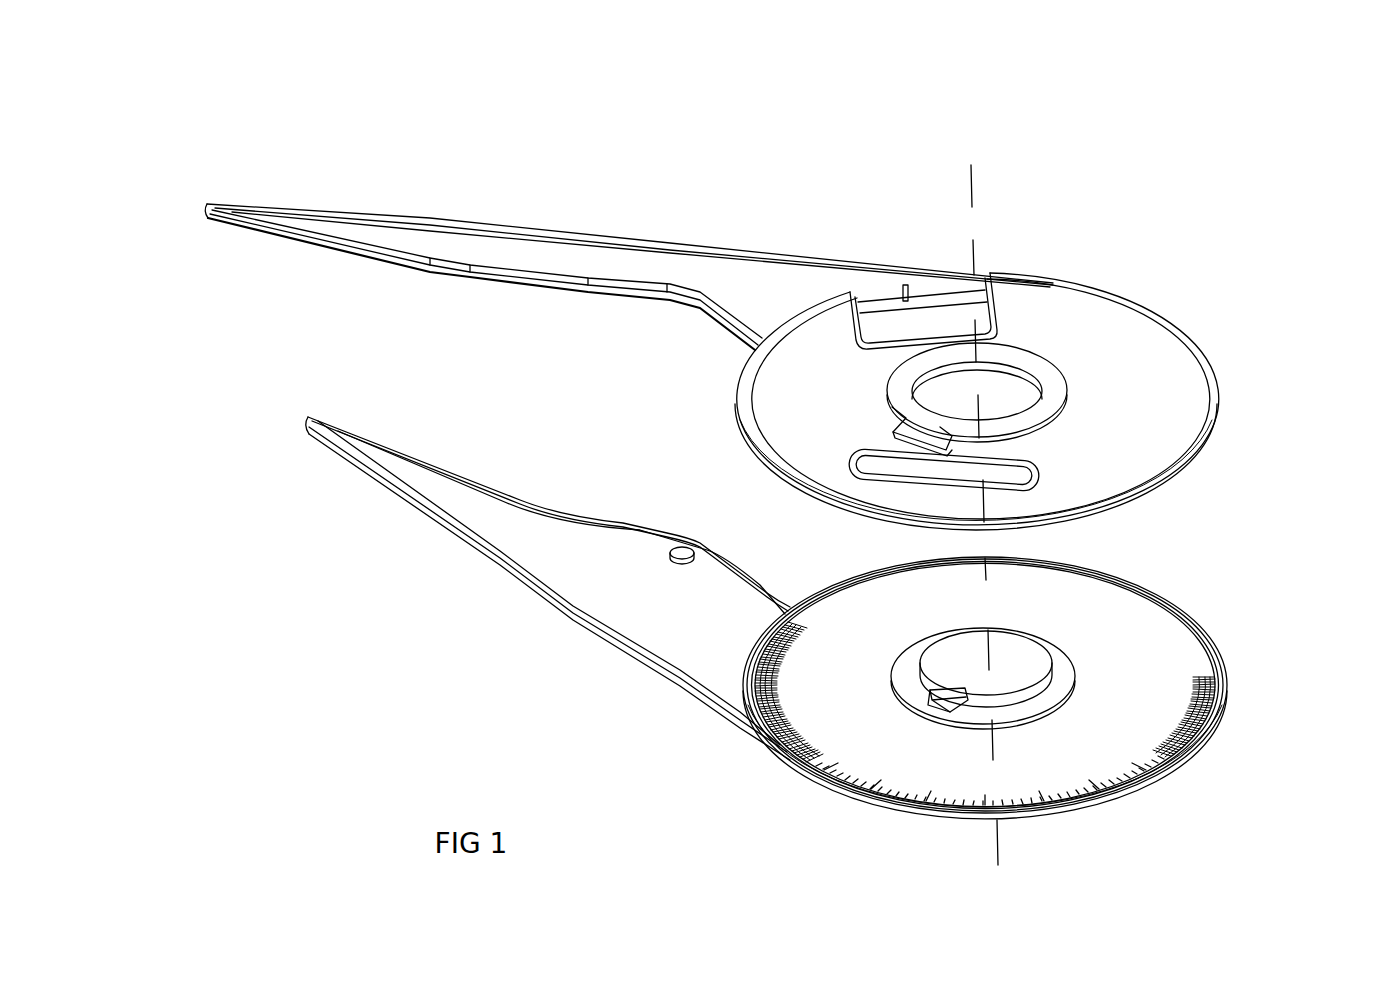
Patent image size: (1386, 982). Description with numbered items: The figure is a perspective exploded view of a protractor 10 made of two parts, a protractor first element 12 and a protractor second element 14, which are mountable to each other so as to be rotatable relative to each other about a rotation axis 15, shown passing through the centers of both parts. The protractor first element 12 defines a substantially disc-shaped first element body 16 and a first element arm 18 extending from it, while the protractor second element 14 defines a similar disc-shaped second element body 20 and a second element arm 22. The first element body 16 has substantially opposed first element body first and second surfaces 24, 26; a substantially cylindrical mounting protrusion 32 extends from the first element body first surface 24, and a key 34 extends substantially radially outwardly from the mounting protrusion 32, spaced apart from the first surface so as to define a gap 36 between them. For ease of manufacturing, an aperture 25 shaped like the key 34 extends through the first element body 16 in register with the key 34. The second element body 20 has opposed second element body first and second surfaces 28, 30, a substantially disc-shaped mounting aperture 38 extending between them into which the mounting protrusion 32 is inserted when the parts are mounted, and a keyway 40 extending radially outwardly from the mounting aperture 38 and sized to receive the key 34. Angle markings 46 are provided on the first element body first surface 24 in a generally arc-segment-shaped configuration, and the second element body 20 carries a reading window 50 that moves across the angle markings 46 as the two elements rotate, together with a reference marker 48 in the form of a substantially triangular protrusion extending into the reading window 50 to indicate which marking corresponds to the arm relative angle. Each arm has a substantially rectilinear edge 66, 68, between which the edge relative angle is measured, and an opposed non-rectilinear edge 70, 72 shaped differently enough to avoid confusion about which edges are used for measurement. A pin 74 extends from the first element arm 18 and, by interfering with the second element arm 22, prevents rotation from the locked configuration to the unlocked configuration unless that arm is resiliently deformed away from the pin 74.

The protractor 10 is at (1187, 141).
The protractor first element 12 is at (1297, 692).
The protractor second element 14 is at (1277, 356).
The rotation axis 15 is at (973, 188).
The first element body 16 is at (1236, 633).
The first element arm 18 is at (565, 498).
The second element body 20 is at (1170, 303).
The second element arm 22 is at (712, 235).
The first element body first surface 24 is at (1083, 613).
The aperture 25 is at (947, 720).
The first element body second surface 26 is at (1191, 751).
The second element body first surface 28 is at (909, 451).
The second element body second surface 30 is at (1160, 481).
The mounting protrusion 32 is at (1007, 657).
The key 34 is at (935, 692).
The gap 36 is at (957, 700).
The mounting aperture 38 is at (1030, 395).
The keyway 40 is at (905, 420).
The angle markings 46 is at (1077, 784).
The reference marker 48 is at (920, 290).
The reading window 50 is at (872, 333).
The substantially rectilinear edge 66 is at (407, 500).
The substantially rectilinear edge 68 is at (620, 237).
The non-rectilinear edge 70 is at (467, 472).
The non-rectilinear edge 72 is at (550, 278).
The pin 74 is at (677, 547).